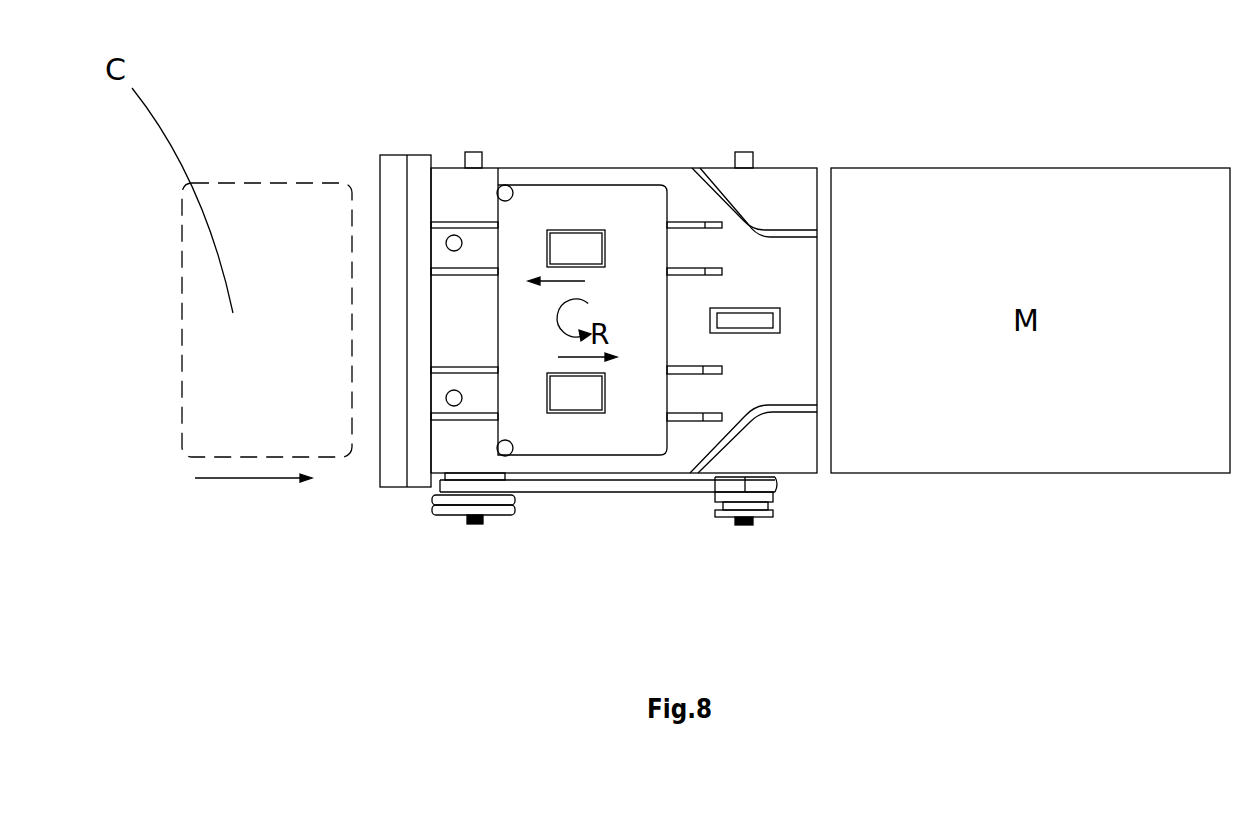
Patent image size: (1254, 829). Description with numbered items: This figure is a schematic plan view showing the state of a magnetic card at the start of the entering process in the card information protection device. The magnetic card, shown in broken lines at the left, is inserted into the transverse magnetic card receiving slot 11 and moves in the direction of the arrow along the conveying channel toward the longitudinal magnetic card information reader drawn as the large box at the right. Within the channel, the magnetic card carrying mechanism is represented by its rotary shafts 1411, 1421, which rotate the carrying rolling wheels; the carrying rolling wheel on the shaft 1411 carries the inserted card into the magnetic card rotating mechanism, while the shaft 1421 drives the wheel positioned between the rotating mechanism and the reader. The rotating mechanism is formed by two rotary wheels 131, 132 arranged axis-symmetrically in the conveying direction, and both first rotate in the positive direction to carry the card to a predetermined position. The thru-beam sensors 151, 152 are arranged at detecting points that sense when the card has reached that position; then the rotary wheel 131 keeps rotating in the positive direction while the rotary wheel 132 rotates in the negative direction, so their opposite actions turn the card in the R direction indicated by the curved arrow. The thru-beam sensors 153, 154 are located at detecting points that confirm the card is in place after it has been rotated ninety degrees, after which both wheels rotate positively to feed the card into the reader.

The transverse magnetic card receiving slot 11 is at (402, 192).
The rotary wheel 131 is at (577, 387).
The rotary wheel 132 is at (575, 252).
The thru-beam sensor 151 is at (507, 452).
The thru-beam sensor 152 is at (504, 192).
The thru-beam sensor 153 is at (451, 240).
The thru-beam sensor 154 is at (452, 400).
The rotary shaft 1411 is at (470, 526).
The rotary shaft 1421 is at (752, 526).